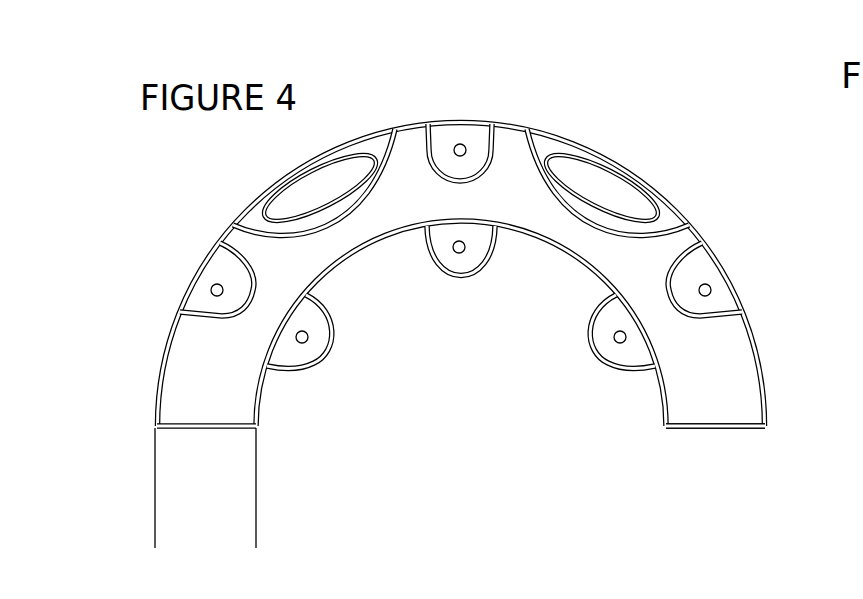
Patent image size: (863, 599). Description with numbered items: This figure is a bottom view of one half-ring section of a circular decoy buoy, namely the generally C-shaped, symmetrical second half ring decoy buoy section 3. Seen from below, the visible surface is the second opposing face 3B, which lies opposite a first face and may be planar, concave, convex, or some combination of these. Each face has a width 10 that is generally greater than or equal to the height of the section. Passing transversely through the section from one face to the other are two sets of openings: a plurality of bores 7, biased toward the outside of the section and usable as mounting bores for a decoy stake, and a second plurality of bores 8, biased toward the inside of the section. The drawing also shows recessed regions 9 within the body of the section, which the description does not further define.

The second half ring decoy buoy section 3 is at (516, 123).
The second opposing face 3B is at (723, 393).
The bores 7 is at (458, 144).
The second plurality of bores 8 is at (709, 284).
The recessed pocket 9 is at (298, 176).
The width 10 is at (156, 532).